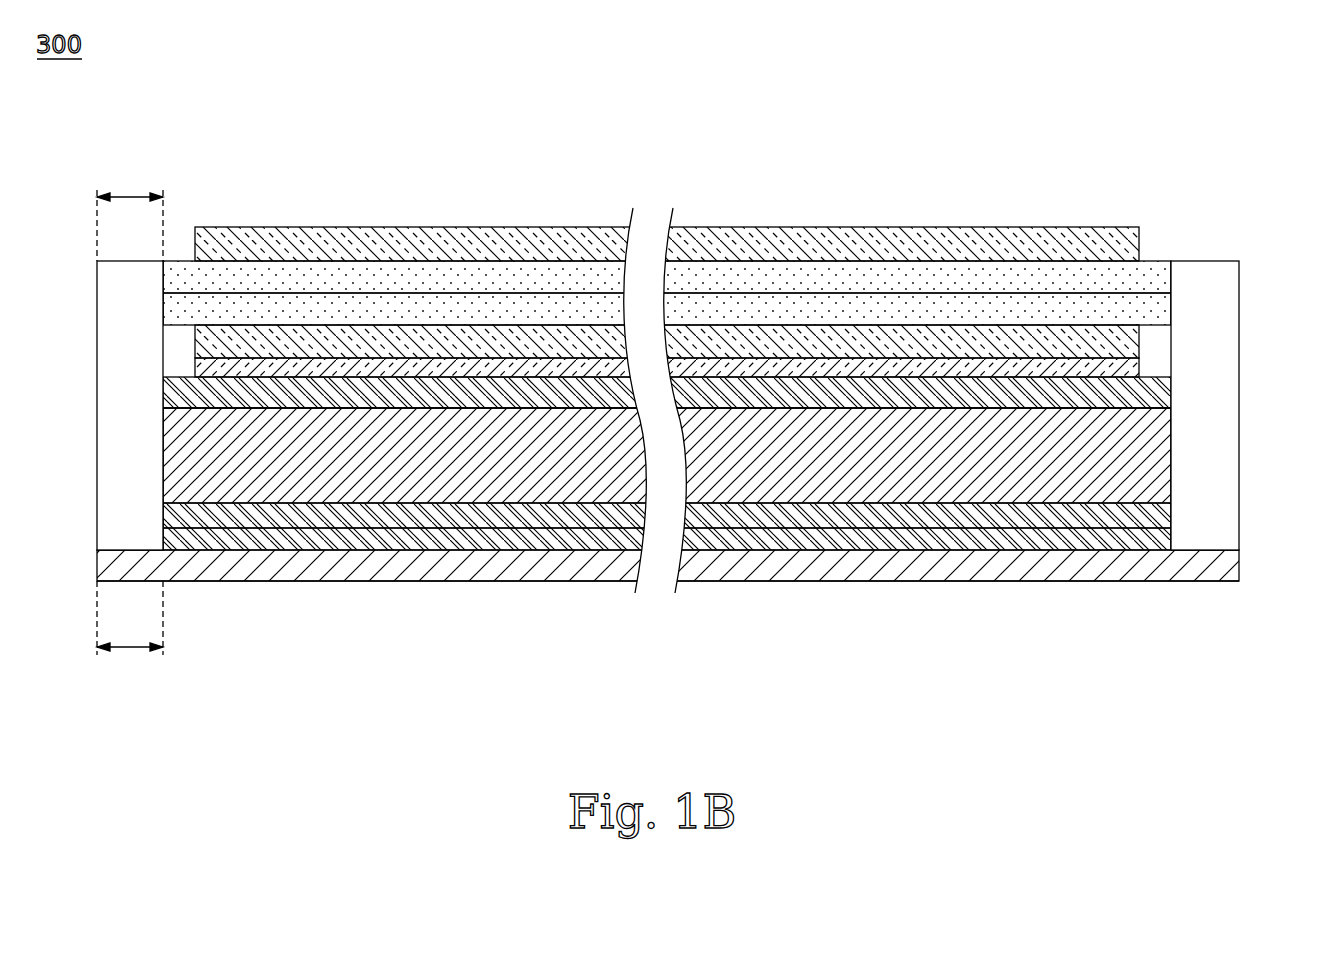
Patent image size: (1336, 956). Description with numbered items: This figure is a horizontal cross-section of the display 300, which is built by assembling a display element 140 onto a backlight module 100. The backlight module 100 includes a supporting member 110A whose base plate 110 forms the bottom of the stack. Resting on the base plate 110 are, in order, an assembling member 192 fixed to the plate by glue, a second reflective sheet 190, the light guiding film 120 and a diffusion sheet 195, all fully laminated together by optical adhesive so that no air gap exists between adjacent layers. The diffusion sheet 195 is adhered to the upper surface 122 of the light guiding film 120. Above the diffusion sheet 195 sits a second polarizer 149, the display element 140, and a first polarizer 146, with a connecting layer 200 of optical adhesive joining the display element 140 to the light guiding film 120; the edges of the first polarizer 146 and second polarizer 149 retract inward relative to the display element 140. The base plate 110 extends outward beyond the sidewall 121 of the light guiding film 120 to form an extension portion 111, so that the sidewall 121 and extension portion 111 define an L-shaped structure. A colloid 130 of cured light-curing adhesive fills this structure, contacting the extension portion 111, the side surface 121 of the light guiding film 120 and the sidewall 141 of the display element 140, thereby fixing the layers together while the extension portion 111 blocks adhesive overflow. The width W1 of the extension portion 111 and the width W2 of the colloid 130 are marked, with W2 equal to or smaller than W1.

The display 300 is at (59, 45).
The backlight module 100 is at (1256, 600).
The base plate 110 is at (592, 565).
The supporting member 110A is at (560, 640).
The extension portion 111 is at (125, 550).
The light guiding film 120 is at (342, 492).
The sidewall of the light guiding film 121 is at (163, 468).
The upper surface of the light guiding film 122 is at (582, 407).
The colloid 130 is at (115, 378).
The display element 140 is at (343, 268).
The sidewall of the display element 141 is at (163, 272).
The first polarizer 146 is at (295, 237).
The second polarizer 149 is at (397, 340).
The second reflective sheet 190 is at (447, 518).
The assembling member 192 is at (523, 538).
The diffusion sheet 195 is at (520, 392).
The connecting layer 200 is at (455, 367).
The width of the extension portion W1 is at (130, 655).
The width of the colloid W2 is at (130, 190).